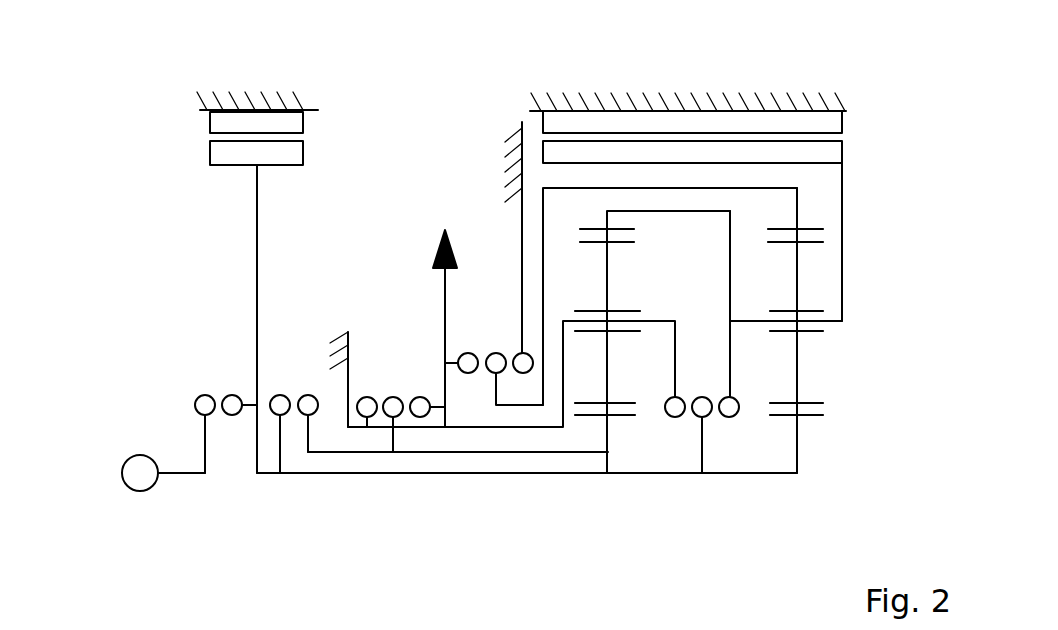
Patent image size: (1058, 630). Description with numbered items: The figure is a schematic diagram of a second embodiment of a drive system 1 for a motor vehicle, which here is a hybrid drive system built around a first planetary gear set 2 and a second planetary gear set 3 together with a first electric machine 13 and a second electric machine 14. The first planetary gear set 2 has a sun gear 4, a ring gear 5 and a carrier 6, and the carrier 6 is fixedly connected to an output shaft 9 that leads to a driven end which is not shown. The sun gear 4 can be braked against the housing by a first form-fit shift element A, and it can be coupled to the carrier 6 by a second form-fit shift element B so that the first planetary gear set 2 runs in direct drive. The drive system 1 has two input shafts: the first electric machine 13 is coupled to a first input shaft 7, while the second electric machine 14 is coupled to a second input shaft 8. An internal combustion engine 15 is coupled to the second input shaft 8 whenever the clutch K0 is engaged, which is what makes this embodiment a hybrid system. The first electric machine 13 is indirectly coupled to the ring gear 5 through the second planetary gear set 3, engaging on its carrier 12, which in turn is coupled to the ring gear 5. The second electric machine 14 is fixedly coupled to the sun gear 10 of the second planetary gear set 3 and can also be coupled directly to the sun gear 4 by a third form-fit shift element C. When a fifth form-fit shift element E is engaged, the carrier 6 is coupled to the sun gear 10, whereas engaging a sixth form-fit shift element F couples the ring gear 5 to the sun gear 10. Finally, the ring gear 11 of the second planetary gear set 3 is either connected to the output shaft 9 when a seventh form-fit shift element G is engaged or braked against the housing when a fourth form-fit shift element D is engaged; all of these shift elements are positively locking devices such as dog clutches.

The drive system 1 is at (118, 517).
The first planetary gear set 2 is at (608, 478).
The second planetary gear set 3 is at (797, 478).
The sun gear 4 is at (483, 453).
The ring gear 5 is at (662, 211).
The carrier 6 is at (653, 322).
The first input shaft 7 is at (842, 268).
The second input shaft 8 is at (257, 265).
The output shaft 9 is at (445, 310).
The sun gear 10 is at (760, 473).
The ring gear 11 is at (730, 188).
The carrier 12 is at (833, 323).
The first electric machine 13 is at (850, 82).
The second electric machine 14 is at (173, 82).
The internal combustion engine 15 is at (128, 459).
The clutch K0 is at (220, 420).
The first form-fit shift element A is at (377, 417).
The second form-fit shift element B is at (405, 417).
The third form-fit shift element C is at (292, 385).
The fourth form-fit shift element D is at (513, 378).
The fifth form-fit shift element E is at (690, 420).
The sixth form-fit shift element F is at (717, 420).
The seventh form-fit shift element G is at (480, 375).